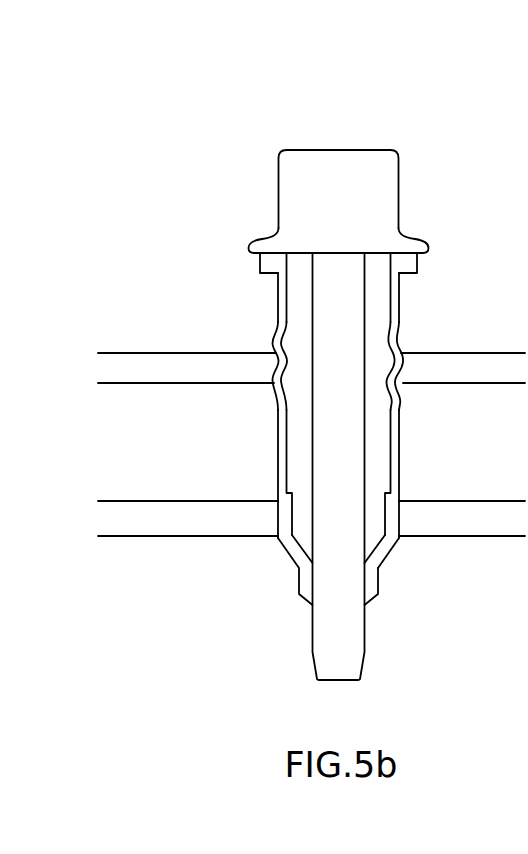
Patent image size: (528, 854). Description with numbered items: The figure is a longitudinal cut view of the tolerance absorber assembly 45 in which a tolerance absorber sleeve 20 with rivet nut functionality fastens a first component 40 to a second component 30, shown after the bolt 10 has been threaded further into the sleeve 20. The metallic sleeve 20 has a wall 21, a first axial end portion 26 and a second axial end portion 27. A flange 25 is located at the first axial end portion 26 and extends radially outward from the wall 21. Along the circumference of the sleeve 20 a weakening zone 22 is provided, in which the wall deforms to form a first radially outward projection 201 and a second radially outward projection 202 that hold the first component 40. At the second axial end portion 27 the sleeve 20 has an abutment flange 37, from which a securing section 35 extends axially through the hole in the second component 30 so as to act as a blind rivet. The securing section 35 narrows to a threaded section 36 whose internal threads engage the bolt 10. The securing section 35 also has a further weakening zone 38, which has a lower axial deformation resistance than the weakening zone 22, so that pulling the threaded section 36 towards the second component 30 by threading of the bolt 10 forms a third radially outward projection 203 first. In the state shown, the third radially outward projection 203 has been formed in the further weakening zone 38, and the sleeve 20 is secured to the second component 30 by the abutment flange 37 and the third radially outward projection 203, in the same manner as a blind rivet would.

The bolt 10 is at (313, 150).
The tolerance absorber sleeve 20 is at (335, 410).
The wall 21 is at (400, 295).
The weakening zone 22 is at (275, 417).
The flange 25 is at (260, 271).
The first axial end portion 26 is at (418, 259).
The second axial end portion 27 is at (400, 488).
The second component 30 is at (145, 535).
The securing section 35 is at (297, 563).
The threaded section 36 is at (378, 597).
The abutment flange 37 is at (284, 497).
The further weakening zone 38 is at (398, 550).
The first component 40 is at (217, 385).
The tolerance absorber assembly 45 is at (415, 118).
The first radially outward projection 201 is at (405, 337).
The second radially outward projection 202 is at (402, 395).
The third radially outward projection 203 is at (397, 543).